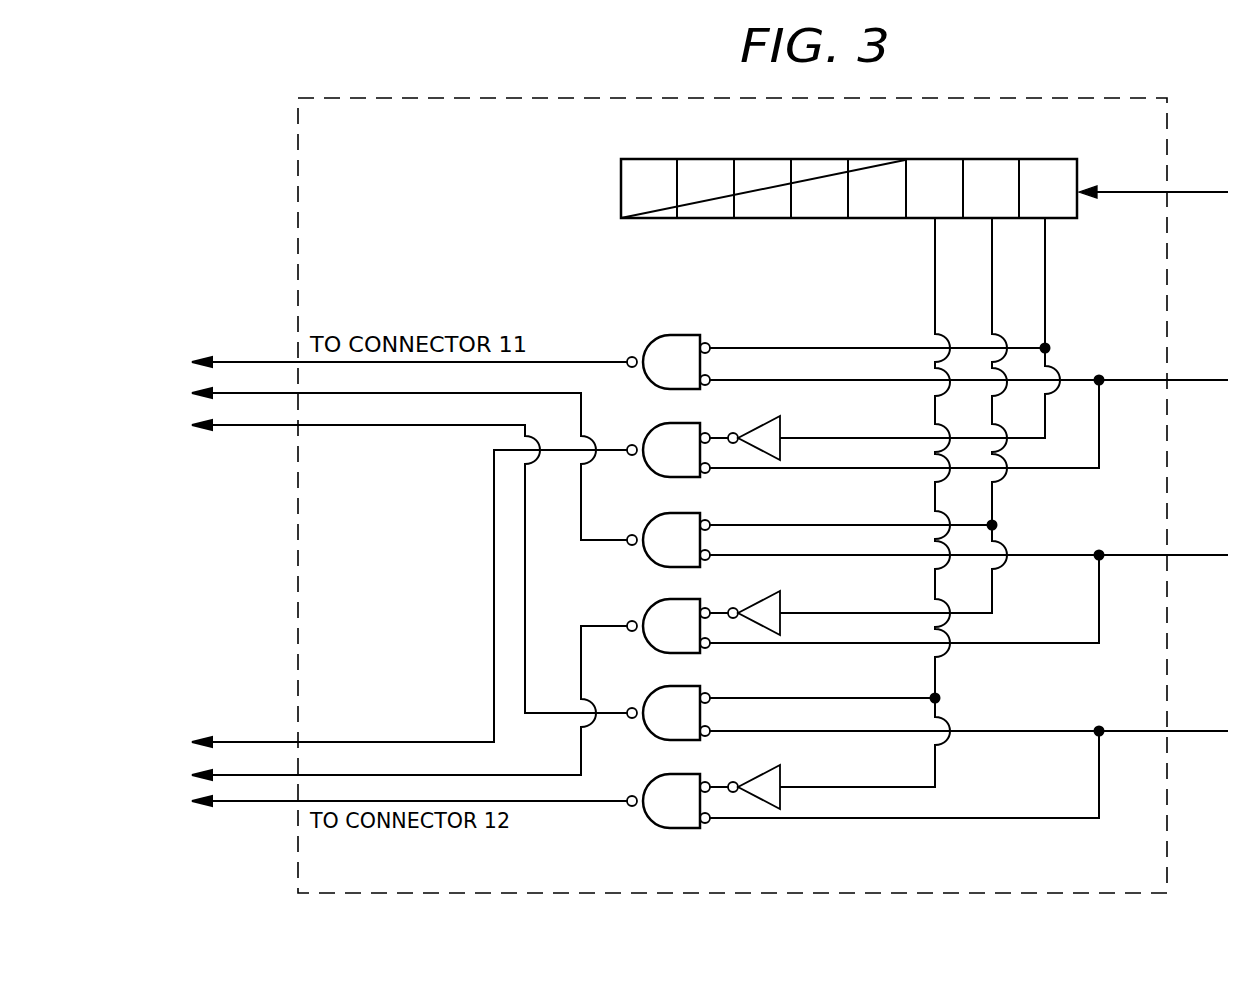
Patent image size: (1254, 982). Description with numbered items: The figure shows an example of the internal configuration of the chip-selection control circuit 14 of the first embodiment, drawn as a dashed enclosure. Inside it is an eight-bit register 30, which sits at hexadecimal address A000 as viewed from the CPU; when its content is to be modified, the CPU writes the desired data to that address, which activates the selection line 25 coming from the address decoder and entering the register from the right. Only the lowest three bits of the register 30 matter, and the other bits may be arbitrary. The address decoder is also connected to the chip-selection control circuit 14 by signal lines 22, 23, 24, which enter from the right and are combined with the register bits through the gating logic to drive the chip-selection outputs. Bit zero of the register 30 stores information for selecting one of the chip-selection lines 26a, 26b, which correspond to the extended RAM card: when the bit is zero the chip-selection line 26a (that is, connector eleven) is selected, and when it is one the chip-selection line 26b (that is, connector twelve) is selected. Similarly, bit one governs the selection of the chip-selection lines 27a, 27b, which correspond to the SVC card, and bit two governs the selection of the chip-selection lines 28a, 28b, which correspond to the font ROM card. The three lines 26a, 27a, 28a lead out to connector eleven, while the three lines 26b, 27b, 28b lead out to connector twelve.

The chip-selection control circuit 14 is at (1150, 97).
The 8-bit register 30 is at (752, 221).
The selection line 25 is at (1197, 192).
The signal line 22 is at (1190, 382).
The signal line 23 is at (1190, 556).
The signal line 24 is at (1190, 732).
The chip-selection line 26a is at (218, 360).
The chip-selection line 27a is at (218, 393).
The chip-selection line 28a is at (218, 428).
The chip-selection line 26b is at (218, 740).
The chip-selection line 27b is at (218, 774).
The chip-selection line 28b is at (218, 806).